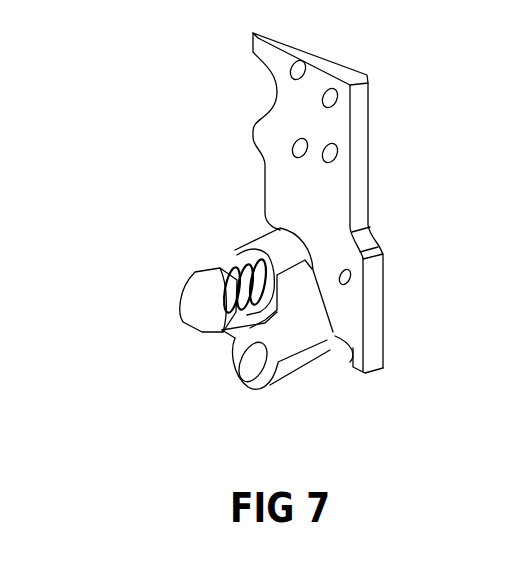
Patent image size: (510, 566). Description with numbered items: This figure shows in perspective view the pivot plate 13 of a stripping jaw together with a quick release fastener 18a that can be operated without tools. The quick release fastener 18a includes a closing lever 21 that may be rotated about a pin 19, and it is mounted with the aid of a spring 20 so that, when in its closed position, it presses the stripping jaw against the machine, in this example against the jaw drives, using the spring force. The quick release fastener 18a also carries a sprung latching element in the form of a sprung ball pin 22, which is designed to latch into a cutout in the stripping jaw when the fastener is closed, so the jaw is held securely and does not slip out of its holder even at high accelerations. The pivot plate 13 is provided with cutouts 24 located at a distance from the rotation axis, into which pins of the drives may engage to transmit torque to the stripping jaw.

The pivot plate 13 is at (362, 117).
The quick release fastener 18a is at (183, 291).
The pin 19 is at (195, 310).
The spring 20 is at (232, 263).
The closing lever 21 is at (270, 250).
The sprung ball pin 22 is at (223, 355).
The cutouts 24 is at (350, 282).